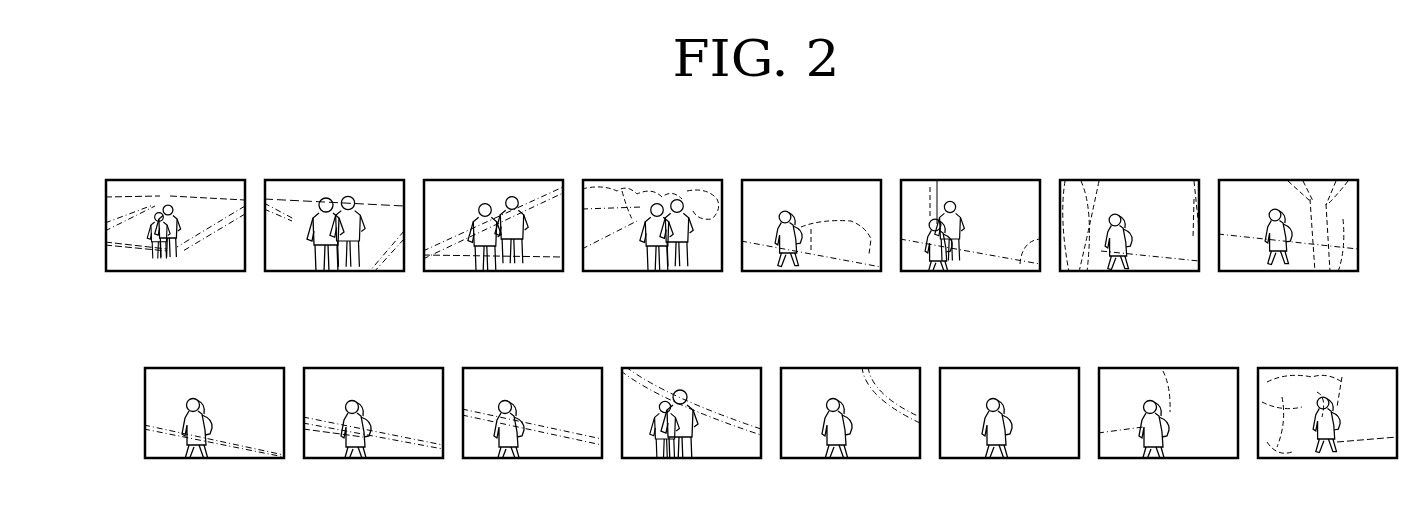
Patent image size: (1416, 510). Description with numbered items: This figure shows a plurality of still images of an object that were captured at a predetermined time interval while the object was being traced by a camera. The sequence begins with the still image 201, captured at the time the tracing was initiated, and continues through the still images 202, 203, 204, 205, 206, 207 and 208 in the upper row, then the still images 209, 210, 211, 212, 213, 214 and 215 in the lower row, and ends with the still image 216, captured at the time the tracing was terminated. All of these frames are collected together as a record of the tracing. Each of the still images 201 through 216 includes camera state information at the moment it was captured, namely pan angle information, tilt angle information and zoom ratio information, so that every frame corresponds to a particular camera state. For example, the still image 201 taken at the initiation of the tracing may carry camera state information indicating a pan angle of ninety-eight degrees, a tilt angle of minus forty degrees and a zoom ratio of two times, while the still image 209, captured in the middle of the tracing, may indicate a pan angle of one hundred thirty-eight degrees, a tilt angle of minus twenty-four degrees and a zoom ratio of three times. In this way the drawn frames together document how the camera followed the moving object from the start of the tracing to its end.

The still image 201 is at (193, 178).
The still image 202 is at (352, 178).
The still image 203 is at (511, 178).
The still image 204 is at (670, 178).
The still image 205 is at (830, 178).
The still image 206 is at (988, 178).
The still image 207 is at (1147, 178).
The still image 208 is at (1305, 178).
The still image 209 is at (232, 366).
The still image 210 is at (391, 366).
The still image 211 is at (550, 366).
The still image 212 is at (709, 366).
The still image 213 is at (868, 366).
The still image 214 is at (1027, 366).
The still image 215 is at (1186, 366).
The still image 216 is at (1345, 366).